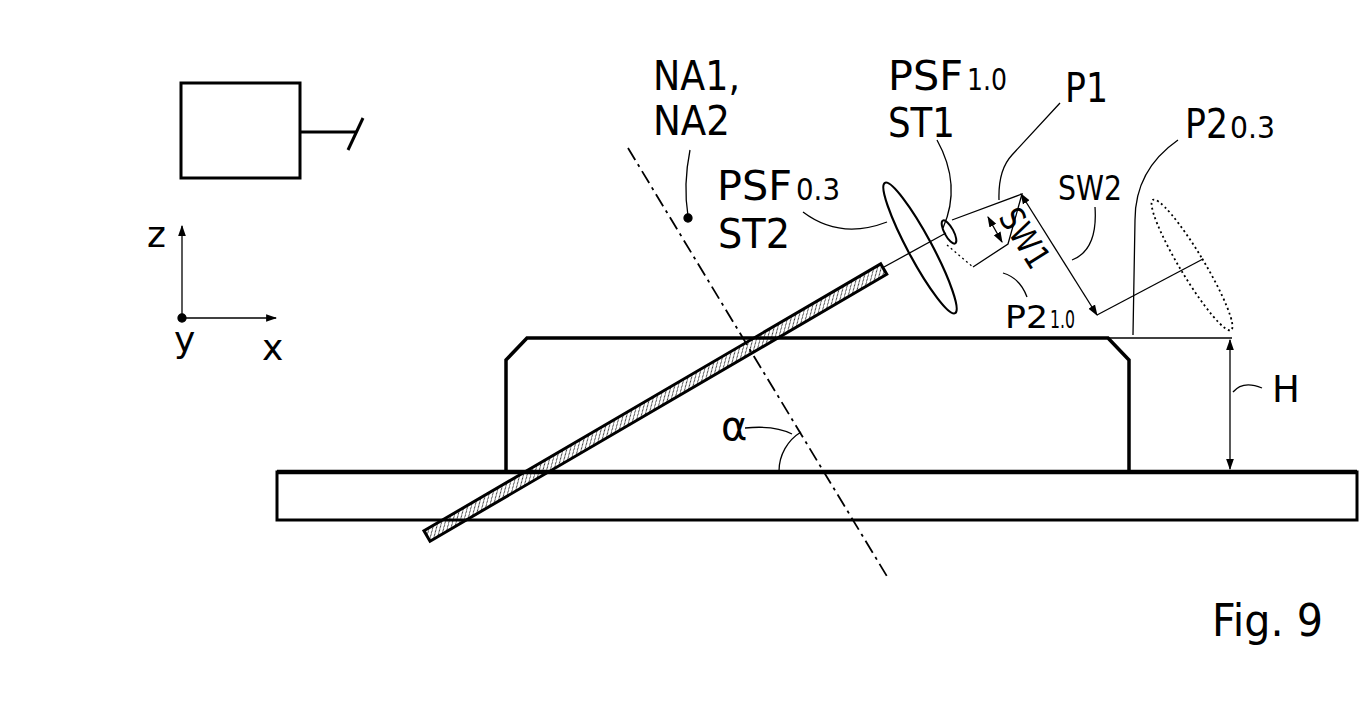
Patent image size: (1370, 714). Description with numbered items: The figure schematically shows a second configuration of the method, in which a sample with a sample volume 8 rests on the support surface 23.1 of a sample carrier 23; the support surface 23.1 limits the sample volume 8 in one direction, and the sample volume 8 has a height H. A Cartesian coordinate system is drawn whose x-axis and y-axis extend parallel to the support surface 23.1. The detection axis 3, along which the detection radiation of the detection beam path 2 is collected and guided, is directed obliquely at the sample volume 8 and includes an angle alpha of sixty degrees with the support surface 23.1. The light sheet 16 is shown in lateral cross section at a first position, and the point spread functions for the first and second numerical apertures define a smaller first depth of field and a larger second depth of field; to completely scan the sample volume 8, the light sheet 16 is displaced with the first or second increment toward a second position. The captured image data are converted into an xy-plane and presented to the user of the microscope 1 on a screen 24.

The microscope 1 is at (435, 70).
The detection beam path 2 is at (512, 157).
The detection axis 3 is at (662, 208).
The sample volume 8 is at (590, 362).
The light sheet 16 is at (837, 292).
The sample carrier 23 is at (325, 510).
The support surface 23.1 is at (337, 469).
The screen 24 is at (262, 148).